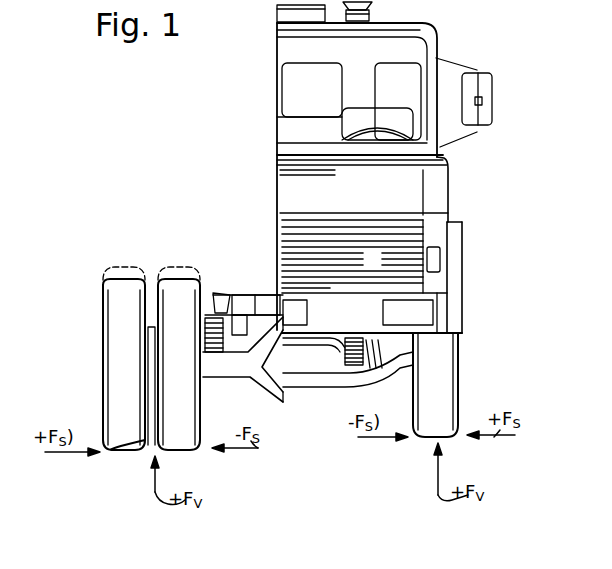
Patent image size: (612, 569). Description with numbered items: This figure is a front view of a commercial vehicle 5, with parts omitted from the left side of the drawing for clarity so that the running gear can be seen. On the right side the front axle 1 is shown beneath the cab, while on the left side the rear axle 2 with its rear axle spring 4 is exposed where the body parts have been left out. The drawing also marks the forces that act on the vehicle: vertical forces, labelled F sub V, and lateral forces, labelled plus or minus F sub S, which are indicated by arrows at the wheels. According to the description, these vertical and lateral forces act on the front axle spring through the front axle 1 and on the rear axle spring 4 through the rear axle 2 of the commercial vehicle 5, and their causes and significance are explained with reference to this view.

The front axle 1 is at (393, 372).
The rear axle 2 is at (268, 377).
The rear axle spring 4 is at (210, 312).
The commercial vehicle 5 is at (482, 190).